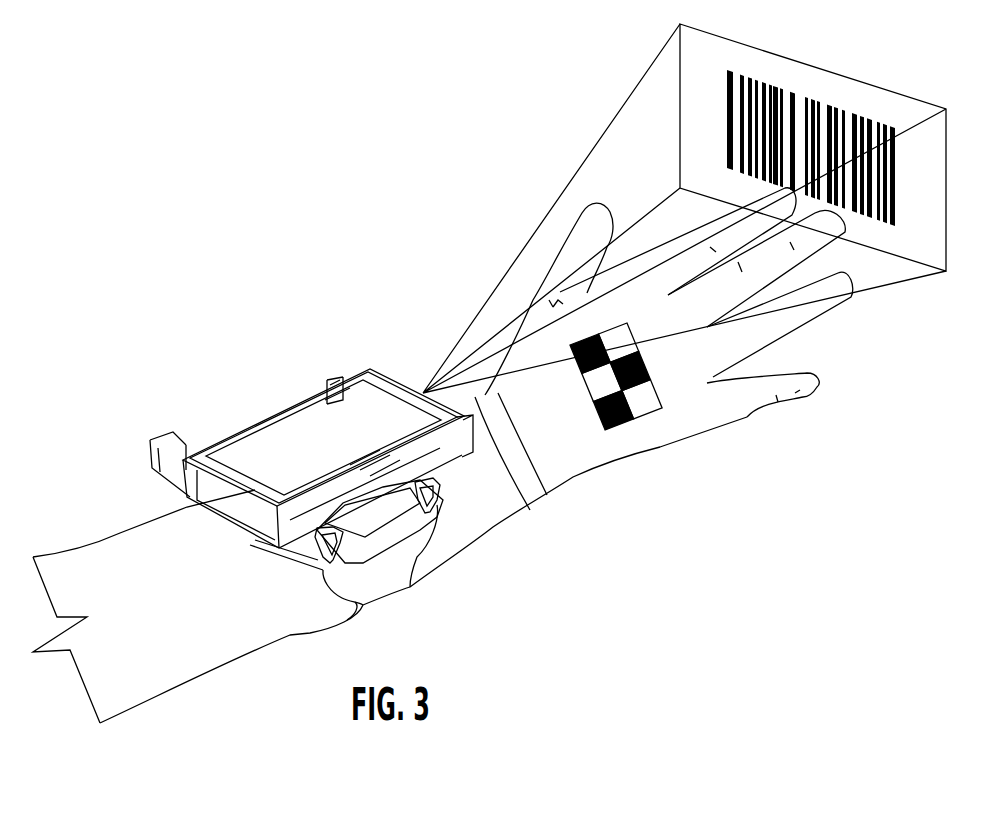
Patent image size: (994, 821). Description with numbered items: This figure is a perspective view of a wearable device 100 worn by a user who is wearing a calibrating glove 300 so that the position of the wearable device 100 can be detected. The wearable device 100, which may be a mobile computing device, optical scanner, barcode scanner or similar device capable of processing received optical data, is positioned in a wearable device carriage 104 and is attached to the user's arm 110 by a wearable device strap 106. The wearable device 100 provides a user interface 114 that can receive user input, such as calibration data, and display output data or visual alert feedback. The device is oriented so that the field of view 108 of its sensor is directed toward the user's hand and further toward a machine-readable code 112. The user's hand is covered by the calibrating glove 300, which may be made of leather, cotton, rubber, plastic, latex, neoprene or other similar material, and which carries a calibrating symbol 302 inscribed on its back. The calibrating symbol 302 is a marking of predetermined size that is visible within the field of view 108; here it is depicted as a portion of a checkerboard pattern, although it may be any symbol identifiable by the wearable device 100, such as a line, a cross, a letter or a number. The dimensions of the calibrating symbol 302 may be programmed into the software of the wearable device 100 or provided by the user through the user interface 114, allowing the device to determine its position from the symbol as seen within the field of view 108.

The wearable device 100 is at (349, 495).
The wearable device carriage 104 is at (462, 474).
The wearable device strap 106 is at (389, 597).
The field of view 108 is at (506, 232).
The user's arm 110 is at (146, 684).
The machine-readable code 112 is at (788, 50).
The user interface 114 is at (280, 445).
The calibrating glove 300 is at (643, 328).
The calibrating symbol 302 is at (633, 430).